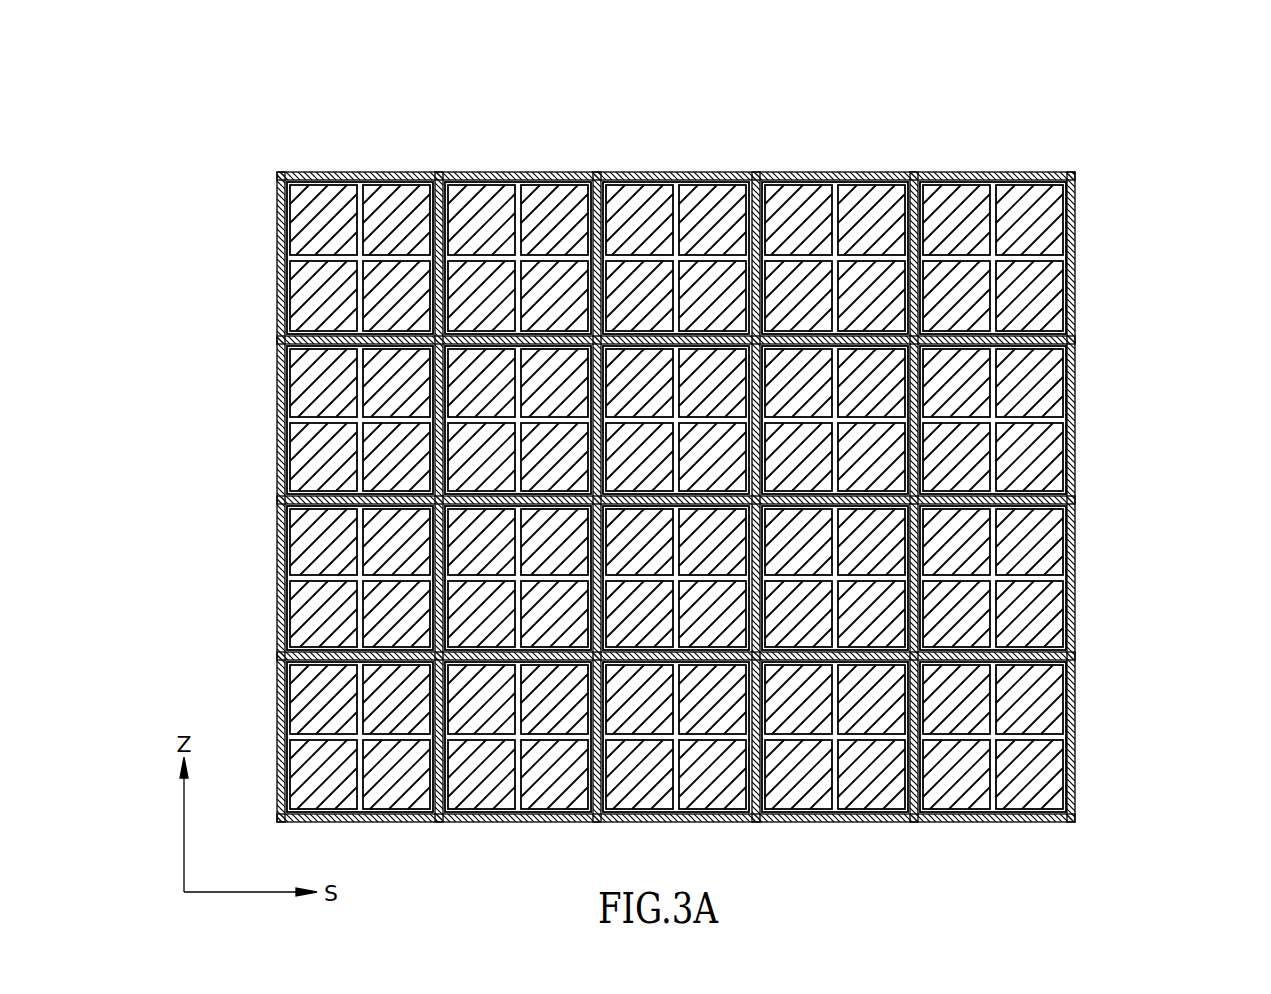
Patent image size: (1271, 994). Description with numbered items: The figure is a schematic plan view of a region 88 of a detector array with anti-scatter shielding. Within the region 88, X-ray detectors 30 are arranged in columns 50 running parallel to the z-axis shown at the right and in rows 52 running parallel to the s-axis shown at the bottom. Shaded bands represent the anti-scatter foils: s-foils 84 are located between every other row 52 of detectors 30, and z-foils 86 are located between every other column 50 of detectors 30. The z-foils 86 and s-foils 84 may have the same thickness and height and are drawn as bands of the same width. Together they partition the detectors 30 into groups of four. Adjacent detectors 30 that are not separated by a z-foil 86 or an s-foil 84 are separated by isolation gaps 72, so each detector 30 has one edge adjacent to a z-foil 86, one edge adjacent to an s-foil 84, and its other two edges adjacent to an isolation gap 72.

The detector 30 is at (390, 438).
The column 50 is at (331, 140).
The row 52 is at (692, 497).
The isolation gap 72 is at (676, 430).
The s-foil 84 is at (283, 500).
The z-foil 86 is at (600, 178).
The region 88 is at (686, 428).